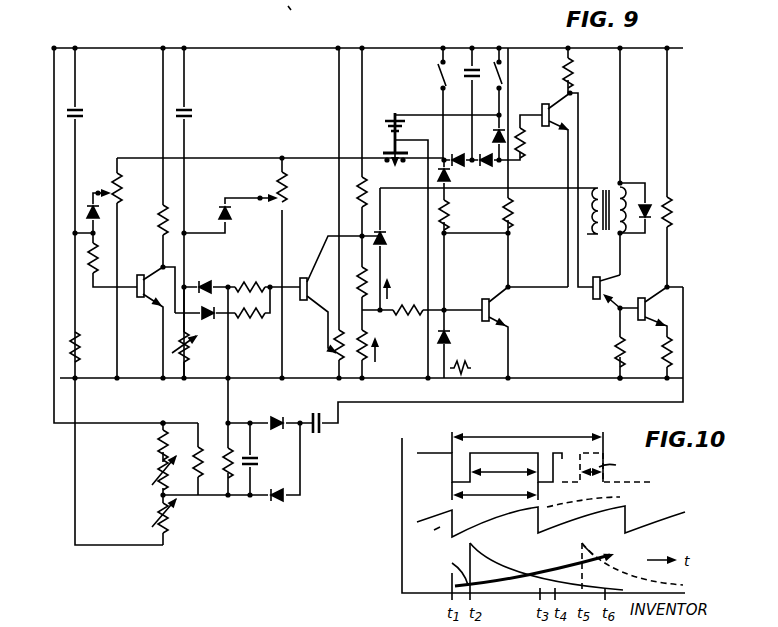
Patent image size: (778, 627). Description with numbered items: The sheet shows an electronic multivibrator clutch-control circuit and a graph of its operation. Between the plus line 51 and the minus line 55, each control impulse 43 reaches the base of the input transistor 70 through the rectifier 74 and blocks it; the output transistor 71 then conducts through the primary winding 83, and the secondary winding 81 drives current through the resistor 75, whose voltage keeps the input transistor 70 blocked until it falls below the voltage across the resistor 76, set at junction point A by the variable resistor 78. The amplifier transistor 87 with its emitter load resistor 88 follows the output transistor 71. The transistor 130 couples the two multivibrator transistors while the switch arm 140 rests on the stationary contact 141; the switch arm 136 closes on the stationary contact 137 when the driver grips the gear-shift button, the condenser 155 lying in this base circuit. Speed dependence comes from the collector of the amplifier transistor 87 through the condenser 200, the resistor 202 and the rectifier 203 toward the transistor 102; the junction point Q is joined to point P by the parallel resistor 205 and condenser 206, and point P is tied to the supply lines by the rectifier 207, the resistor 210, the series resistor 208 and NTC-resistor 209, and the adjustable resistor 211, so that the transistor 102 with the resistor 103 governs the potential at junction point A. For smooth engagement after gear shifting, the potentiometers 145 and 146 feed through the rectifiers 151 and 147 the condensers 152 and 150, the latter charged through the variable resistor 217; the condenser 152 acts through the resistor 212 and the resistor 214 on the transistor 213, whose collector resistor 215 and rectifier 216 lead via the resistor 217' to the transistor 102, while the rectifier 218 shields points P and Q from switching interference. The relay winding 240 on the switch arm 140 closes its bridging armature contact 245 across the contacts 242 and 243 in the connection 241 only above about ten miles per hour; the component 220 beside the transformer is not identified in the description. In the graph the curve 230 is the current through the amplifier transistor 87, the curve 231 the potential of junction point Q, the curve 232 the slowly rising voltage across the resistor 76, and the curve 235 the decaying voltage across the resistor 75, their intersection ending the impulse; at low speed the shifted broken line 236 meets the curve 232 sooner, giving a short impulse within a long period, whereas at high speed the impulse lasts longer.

In FIG. 9, the plus line 51 is at (558, 377).
In FIG. 9, the minus line 55 is at (236, 48).
In FIG. 9, the input transistor 70 is at (500, 310).
In FIG. 9, the output transistor 71 is at (608, 278).
In FIG. 9, the germanium rectifier 74 is at (453, 334).
In FIG. 9, the resistor 75 is at (412, 314).
In FIG. 9, the resistor 76 is at (362, 274).
In FIG. 9, the variable resistor 78 is at (369, 360).
In FIG. 9, the secondary winding 81 is at (590, 187).
In FIG. 9, the primary winding 83 is at (645, 222).
In FIG. 9, the amplifier transistor 87 is at (648, 285).
In FIG. 9, the load resistor 88 is at (664, 352).
In FIG. 9, the control impulses 43 is at (473, 367).
In FIG. 9, the transistor 102 is at (308, 276).
In FIG. 9, the resistor 103 is at (382, 207).
In FIG. 9, the transistor 130 is at (552, 99).
In FIG. 9, the movable switch arm 136 is at (436, 72).
In FIG. 9, the stationary contact 137 is at (446, 60).
In FIG. 9, the movable switch arm 140 is at (506, 74).
In FIG. 9, the stationary contact 141 is at (506, 60).
In FIG. 9, the potentiometer 145 is at (118, 196).
In FIG. 9, the potentiometer 146 is at (288, 196).
In FIG. 9, the rectifier 147 is at (219, 203).
In FIG. 9, the condenser 150 is at (193, 113).
In FIG. 9, the rectifier 151 is at (88, 200).
In FIG. 9, the condenser 152 is at (83, 113).
In FIG. 9, the condenser 155 is at (476, 66).
In FIG. 9, the condenser 200 is at (320, 432).
In FIG. 9, the resistor 202 is at (250, 284).
In FIG. 9, the rectifier 203 is at (276, 417).
In FIG. 9, the resistor 205 is at (226, 450).
In FIG. 9, the condenser 206 is at (254, 462).
In FIG. 9, the rectifier 207 is at (278, 502).
In FIG. 9, the resistor 208 is at (160, 441).
In FIG. 9, the NTC-resistor 209 is at (160, 476).
In FIG. 9, the resistor 210 is at (192, 482).
In FIG. 9, the adjustable resistor 211 is at (160, 519).
In FIG. 9, the resistor 212 is at (93, 276).
In FIG. 9, the transistor 213 is at (153, 275).
In FIG. 9, the resistor 214 is at (78, 346).
In FIG. 9, the resistor 215 is at (161, 223).
In FIG. 9, the rectifier 216 is at (182, 362).
In FIG. 9, the variable resistor 217 is at (162, 342).
In FIG. 9, the resistor 217' is at (223, 317).
In FIG. 9, the rectifier 218 is at (205, 280).
In FIG. 9, the resistor 220 is at (664, 195).
In FIG. 10, the curve 230 is at (433, 449).
In FIG. 10, the curve 231 is at (625, 515).
In FIG. 10, the curve 232 is at (558, 573).
In FIG. 10, the curve 235 is at (517, 567).
In FIG. 10, the broken line 236 is at (623, 567).
In FIG. 9, the relay winding 240 is at (390, 113).
In FIG. 9, the connection 241 is at (350, 158).
In FIG. 9, the relay controlled contact 242 is at (373, 189).
In FIG. 9, the relay controlled contact 243 is at (403, 168).
In FIG. 9, the bridging armature contact 245 is at (385, 137).